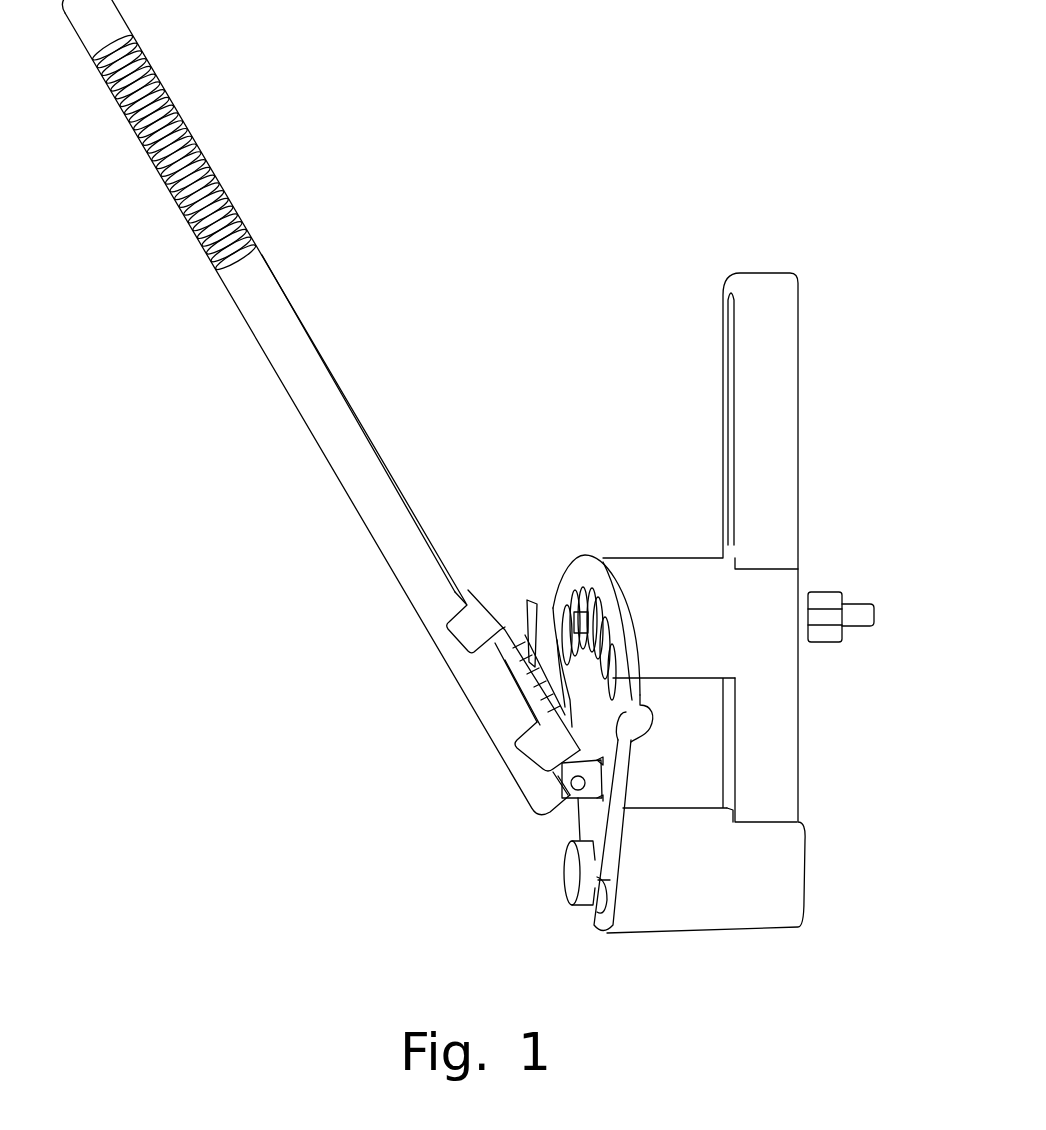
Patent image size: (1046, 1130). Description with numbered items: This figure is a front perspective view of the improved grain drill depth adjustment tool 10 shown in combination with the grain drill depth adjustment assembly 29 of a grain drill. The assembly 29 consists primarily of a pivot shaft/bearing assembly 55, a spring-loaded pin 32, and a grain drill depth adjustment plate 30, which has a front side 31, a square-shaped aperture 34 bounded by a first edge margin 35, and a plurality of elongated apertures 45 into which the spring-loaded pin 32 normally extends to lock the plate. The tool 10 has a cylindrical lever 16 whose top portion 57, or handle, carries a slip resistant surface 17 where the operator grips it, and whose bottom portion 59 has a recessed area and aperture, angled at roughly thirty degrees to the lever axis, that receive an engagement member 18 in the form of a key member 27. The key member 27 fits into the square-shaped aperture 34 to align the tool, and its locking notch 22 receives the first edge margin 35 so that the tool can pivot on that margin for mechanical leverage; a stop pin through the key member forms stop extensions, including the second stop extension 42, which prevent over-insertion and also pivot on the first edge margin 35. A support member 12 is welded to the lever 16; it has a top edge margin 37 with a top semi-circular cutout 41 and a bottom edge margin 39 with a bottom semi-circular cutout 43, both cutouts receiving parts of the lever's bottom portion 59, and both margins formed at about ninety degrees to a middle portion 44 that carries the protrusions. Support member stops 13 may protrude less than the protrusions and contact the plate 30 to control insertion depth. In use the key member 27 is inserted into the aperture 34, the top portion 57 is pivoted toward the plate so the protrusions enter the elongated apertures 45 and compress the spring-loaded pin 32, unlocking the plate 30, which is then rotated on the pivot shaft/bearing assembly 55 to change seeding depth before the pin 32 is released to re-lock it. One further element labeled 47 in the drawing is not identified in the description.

The improved grain drill depth adjustment tool 10 is at (230, 355).
The lever 16 is at (330, 452).
The slip resistant surface 17 is at (257, 253).
The top portion 57 is at (307, 373).
The support member 12 is at (520, 600).
The support member stops 13 is at (535, 600).
The top semi-circular cutout 41 is at (450, 625).
The top edge margin 37 is at (462, 636).
The bottom portion 59 is at (473, 677).
The middle portion 44 is at (518, 693).
The bottom semi-circular cutout 43 is at (537, 750).
The bottom edge margin 39 is at (545, 772).
The square-shaped aperture 34 is at (557, 795).
The second stop extension 42 is at (573, 795).
The key member 27 is at (535, 856).
The engagement member 18 is at (538, 862).
The locking notch 22 is at (575, 818).
The spring-loaded pin 32 is at (570, 605).
The front side 31 is at (580, 600).
The grain drill depth adjustment plate 30 is at (590, 592).
The grain drill depth adjustment assembly 29 is at (818, 466).
The cylinder body 47 is at (613, 650).
The plurality of elongated apertures 45 is at (613, 678).
The first edge margin 35 is at (607, 780).
The pivot shaft/bearing assembly 55 is at (577, 927).